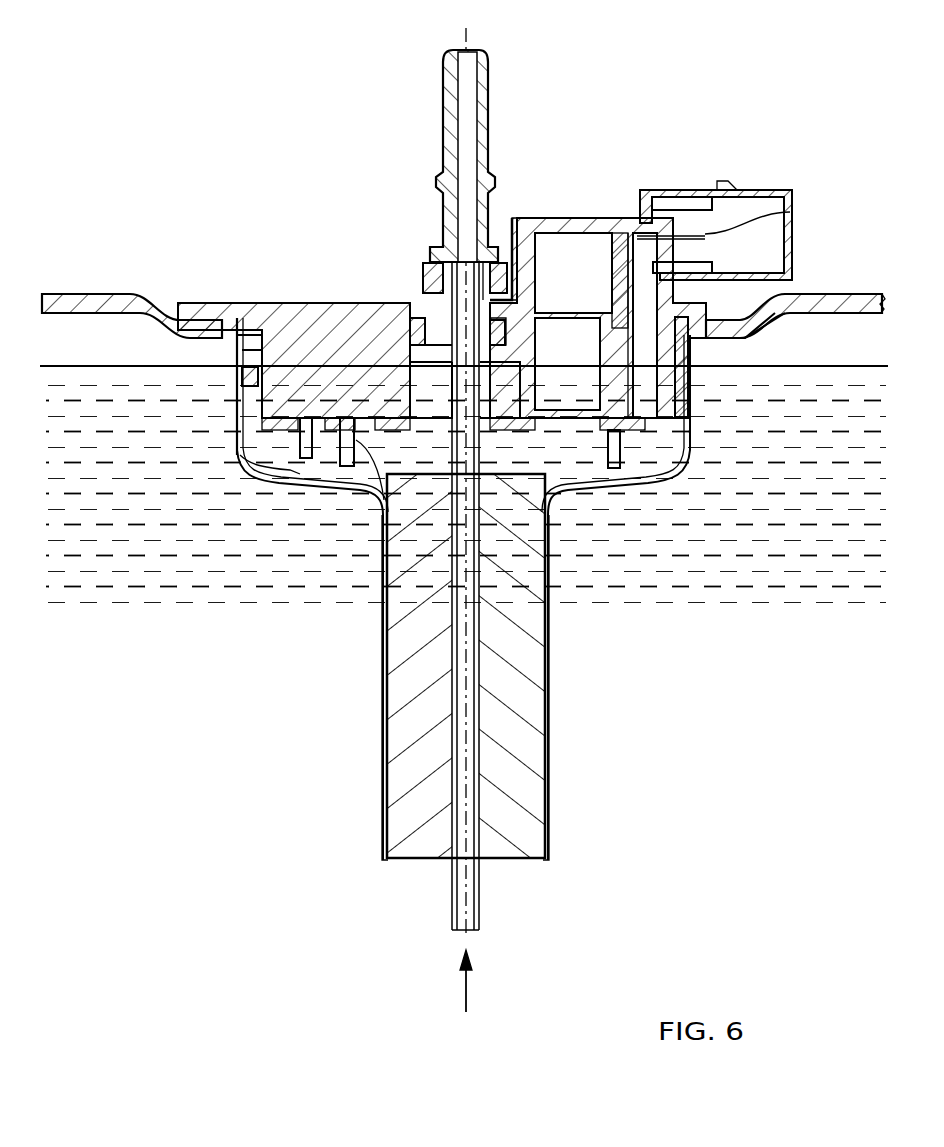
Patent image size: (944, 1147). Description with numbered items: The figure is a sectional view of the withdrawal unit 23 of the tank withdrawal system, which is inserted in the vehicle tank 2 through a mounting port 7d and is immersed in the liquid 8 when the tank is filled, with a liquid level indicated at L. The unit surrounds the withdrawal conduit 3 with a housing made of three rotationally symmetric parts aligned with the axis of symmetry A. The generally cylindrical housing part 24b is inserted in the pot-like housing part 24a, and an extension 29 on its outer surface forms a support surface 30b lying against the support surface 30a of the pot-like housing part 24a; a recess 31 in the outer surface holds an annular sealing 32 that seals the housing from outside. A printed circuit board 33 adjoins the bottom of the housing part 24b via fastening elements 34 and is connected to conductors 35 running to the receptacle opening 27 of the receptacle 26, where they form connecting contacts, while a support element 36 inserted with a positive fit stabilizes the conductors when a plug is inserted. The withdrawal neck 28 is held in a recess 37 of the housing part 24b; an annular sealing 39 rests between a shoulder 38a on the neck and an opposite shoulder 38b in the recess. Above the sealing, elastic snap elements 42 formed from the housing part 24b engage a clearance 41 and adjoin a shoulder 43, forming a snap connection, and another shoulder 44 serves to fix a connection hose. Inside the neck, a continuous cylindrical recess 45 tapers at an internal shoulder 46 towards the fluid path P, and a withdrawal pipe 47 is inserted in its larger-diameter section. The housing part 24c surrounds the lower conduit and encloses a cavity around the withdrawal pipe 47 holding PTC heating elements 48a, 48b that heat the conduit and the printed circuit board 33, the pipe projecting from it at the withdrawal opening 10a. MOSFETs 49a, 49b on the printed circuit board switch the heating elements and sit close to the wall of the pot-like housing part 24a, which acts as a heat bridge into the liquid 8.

The vehicle tank 2 is at (826, 295).
The withdrawal conduit 3 is at (481, 914).
The mounting port 7d is at (224, 338).
The liquid 8 is at (182, 577).
The withdrawal opening 10a is at (469, 935).
The withdrawal unit 23 is at (280, 252).
The pot-like housing part 24a is at (668, 480).
The housing part 24b is at (240, 303).
The housing part 24c is at (546, 720).
The receptacle 26 is at (684, 195).
The receptacle opening 27 is at (768, 234).
The withdrawal neck 28 is at (484, 100).
The extension 29 is at (762, 322).
The support surface 30a is at (723, 338).
The support surface 30b is at (742, 338).
The recess 31 is at (236, 405).
The annular sealing 32 is at (240, 372).
The printed circuit board 33 is at (256, 478).
The fastening elements 34 is at (310, 462).
The conductors 35 is at (788, 212).
The support element 36 is at (618, 270).
The recess 37 is at (366, 480).
The shoulder 38a is at (408, 318).
The shoulder 38b is at (416, 318).
The annular sealing 39 is at (426, 345).
The clearance 41 is at (430, 268).
The elastic snap elements 42 is at (513, 260).
The shoulder 43 is at (441, 250).
The shoulder 44 is at (438, 178).
The cylindrical recess 45 is at (455, 72).
The internal shoulder 46 is at (490, 250).
The withdrawal pipe 47 is at (481, 880).
The PTC heating element 48a is at (512, 578).
The PTC heating element 48b is at (400, 706).
The MOSFET 49a is at (612, 468).
The MOSFET 49b is at (344, 470).
The axis of symmetry A is at (470, 33).
The liquid level L is at (710, 370).
The fluid path P is at (475, 981).